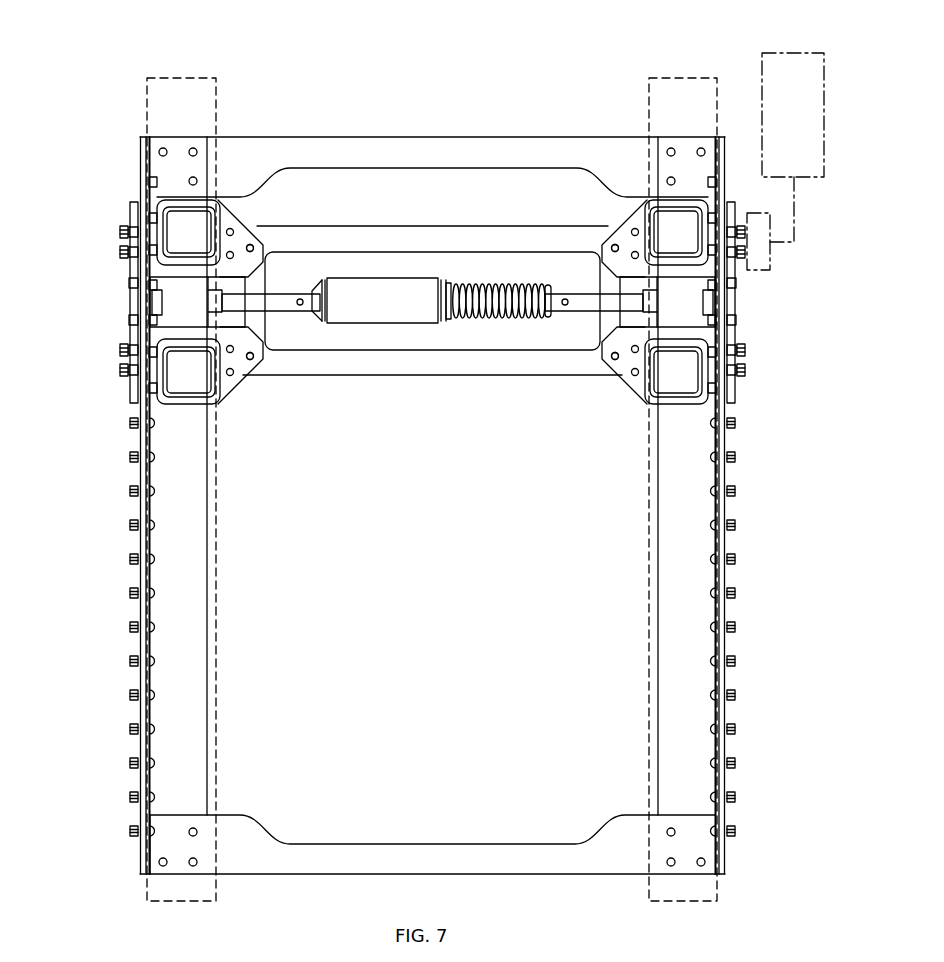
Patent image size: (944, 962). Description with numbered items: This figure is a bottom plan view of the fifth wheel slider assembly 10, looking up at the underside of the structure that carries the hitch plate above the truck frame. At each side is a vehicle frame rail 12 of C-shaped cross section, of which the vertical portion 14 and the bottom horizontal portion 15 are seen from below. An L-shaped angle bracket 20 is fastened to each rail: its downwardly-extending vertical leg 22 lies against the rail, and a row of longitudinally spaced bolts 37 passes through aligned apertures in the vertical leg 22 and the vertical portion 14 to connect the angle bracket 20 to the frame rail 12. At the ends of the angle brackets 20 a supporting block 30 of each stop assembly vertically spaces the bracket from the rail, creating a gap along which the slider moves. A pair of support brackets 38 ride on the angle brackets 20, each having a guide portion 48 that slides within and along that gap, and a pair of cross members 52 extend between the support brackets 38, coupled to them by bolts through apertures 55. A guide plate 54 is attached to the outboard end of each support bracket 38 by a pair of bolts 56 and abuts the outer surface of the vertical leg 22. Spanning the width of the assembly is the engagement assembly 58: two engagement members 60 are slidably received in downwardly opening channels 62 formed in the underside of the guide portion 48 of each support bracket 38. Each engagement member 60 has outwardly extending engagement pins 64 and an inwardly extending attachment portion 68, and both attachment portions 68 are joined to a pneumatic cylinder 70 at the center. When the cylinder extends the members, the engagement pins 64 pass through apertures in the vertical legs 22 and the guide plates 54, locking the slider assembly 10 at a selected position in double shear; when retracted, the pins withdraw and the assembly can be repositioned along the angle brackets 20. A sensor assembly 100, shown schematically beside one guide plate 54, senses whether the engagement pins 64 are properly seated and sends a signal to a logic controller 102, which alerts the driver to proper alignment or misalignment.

The fifth wheel slider assembly 10 is at (104, 62).
The vehicle frame rail 12 is at (192, 78).
The vertical portion 14 is at (146, 118).
The bottom horizontal portion 15 is at (152, 96).
The angle bracket 20 is at (130, 525).
The vertical leg 22 is at (130, 423).
The supporting block 30 is at (193, 165).
The bolt 37 is at (130, 661).
The support bracket 38 is at (148, 183).
The guide portion 48 is at (190, 400).
The cross member 52 is at (495, 240).
The guide plate 54 is at (135, 395).
The aperture 55 is at (254, 247).
The bolt 56 is at (119, 232).
The engagement assembly 58 is at (571, 253).
The engagement member 60 is at (188, 283).
The channel 62 is at (215, 385).
The engagement pin 64 is at (132, 283).
The attachment portion 68 is at (290, 305).
The pneumatic cylinder 70 is at (385, 323).
The sensor assembly 100 is at (749, 214).
The logic controller 102 is at (800, 55).